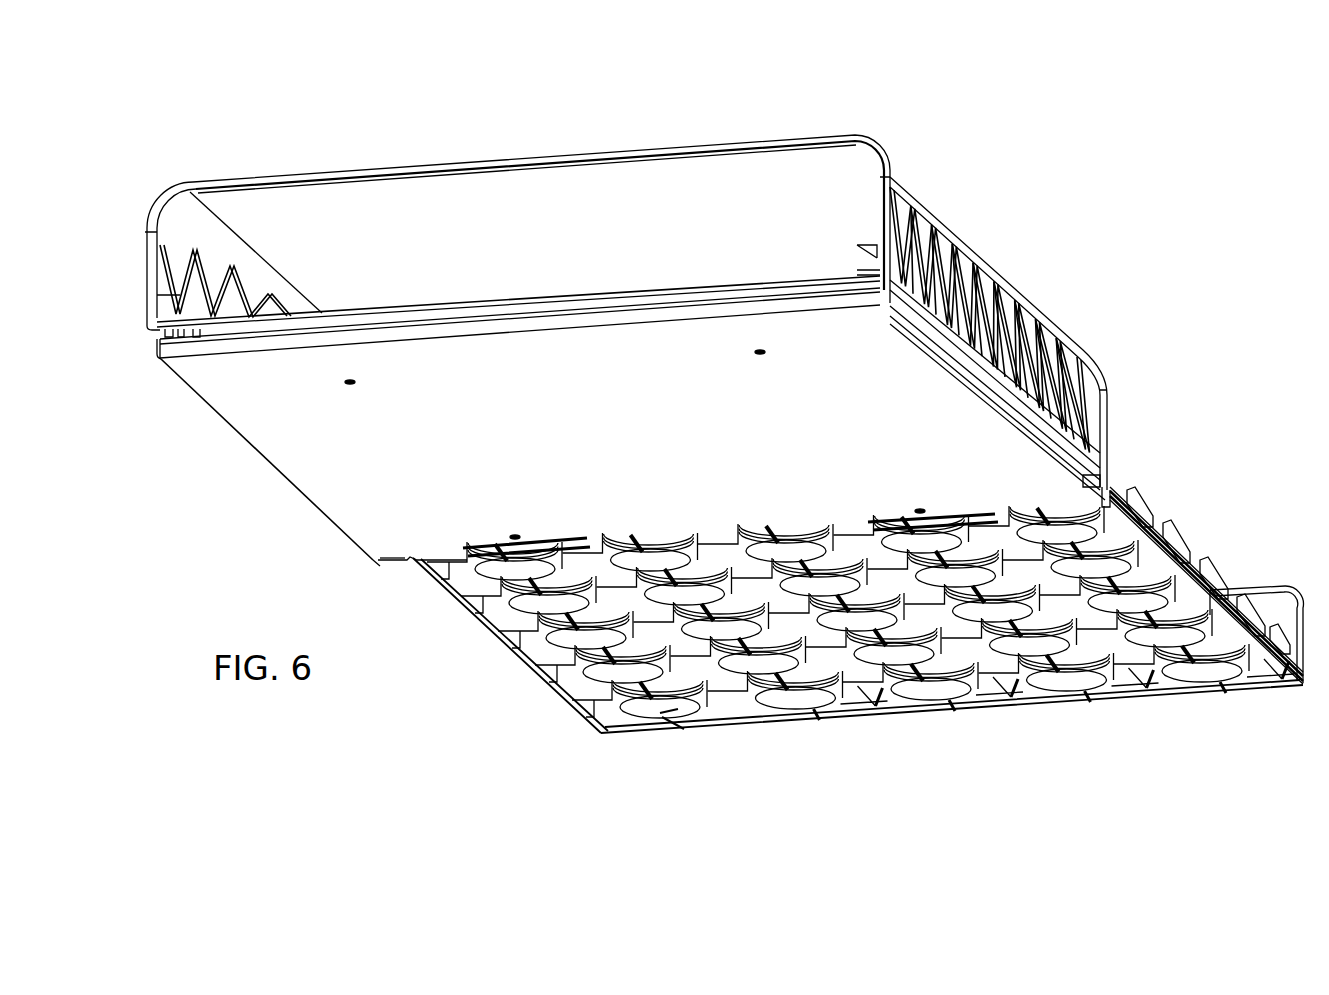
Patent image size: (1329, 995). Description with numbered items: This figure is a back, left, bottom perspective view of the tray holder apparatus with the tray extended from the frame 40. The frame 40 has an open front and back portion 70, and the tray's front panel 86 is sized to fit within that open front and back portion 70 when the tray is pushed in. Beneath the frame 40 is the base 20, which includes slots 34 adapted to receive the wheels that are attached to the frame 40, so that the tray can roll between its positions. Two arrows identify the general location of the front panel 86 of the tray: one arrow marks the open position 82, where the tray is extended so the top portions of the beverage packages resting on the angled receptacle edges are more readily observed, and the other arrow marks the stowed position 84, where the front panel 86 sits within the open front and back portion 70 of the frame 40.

The base 20 is at (318, 452).
The slots 34 is at (406, 580).
The frame 40 is at (660, 149).
The open front and back portion 70 is at (483, 215).
The open position 82 is at (1282, 539).
The stowed position 84 is at (1122, 447).
The front panel 86 is at (1164, 688).